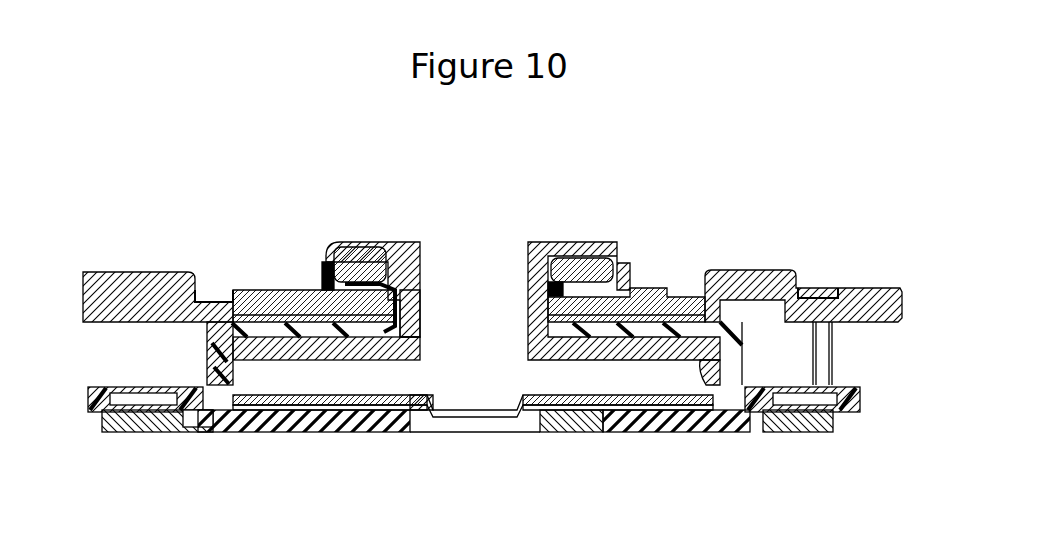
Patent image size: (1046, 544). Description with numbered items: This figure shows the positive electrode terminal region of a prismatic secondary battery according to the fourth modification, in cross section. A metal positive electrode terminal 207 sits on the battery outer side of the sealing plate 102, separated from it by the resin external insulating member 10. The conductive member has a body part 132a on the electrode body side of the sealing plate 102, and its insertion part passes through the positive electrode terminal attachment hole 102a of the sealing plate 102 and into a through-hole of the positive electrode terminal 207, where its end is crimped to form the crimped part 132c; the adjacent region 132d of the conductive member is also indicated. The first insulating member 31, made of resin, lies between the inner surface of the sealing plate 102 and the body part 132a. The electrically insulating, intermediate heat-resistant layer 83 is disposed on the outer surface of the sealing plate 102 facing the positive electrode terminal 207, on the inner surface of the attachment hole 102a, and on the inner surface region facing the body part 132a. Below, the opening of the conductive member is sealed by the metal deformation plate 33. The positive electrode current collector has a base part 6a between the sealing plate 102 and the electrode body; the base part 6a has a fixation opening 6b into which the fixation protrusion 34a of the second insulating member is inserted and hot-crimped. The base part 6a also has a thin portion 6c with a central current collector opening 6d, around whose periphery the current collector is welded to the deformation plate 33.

The body part 132a is at (262, 348).
The first insulating member 31 is at (297, 318).
The electrically insulating, intermediate heat-resistant layer 83 is at (318, 280).
The positive electrode terminal 207 is at (352, 256).
The crimped part 132c is at (400, 256).
The housing back wall 132d is at (410, 308).
The external insulating member 10 is at (635, 262).
The sealing plate 102 is at (860, 305).
The fixation opening 6b is at (222, 433).
The fixation protrusion 34a is at (250, 433).
The deformation plate 33 is at (290, 433).
The positive electrode terminal attachment hole 102a is at (378, 300).
The base part 6a is at (390, 433).
The thin portion 6c is at (423, 433).
The current collector opening 6d is at (460, 433).